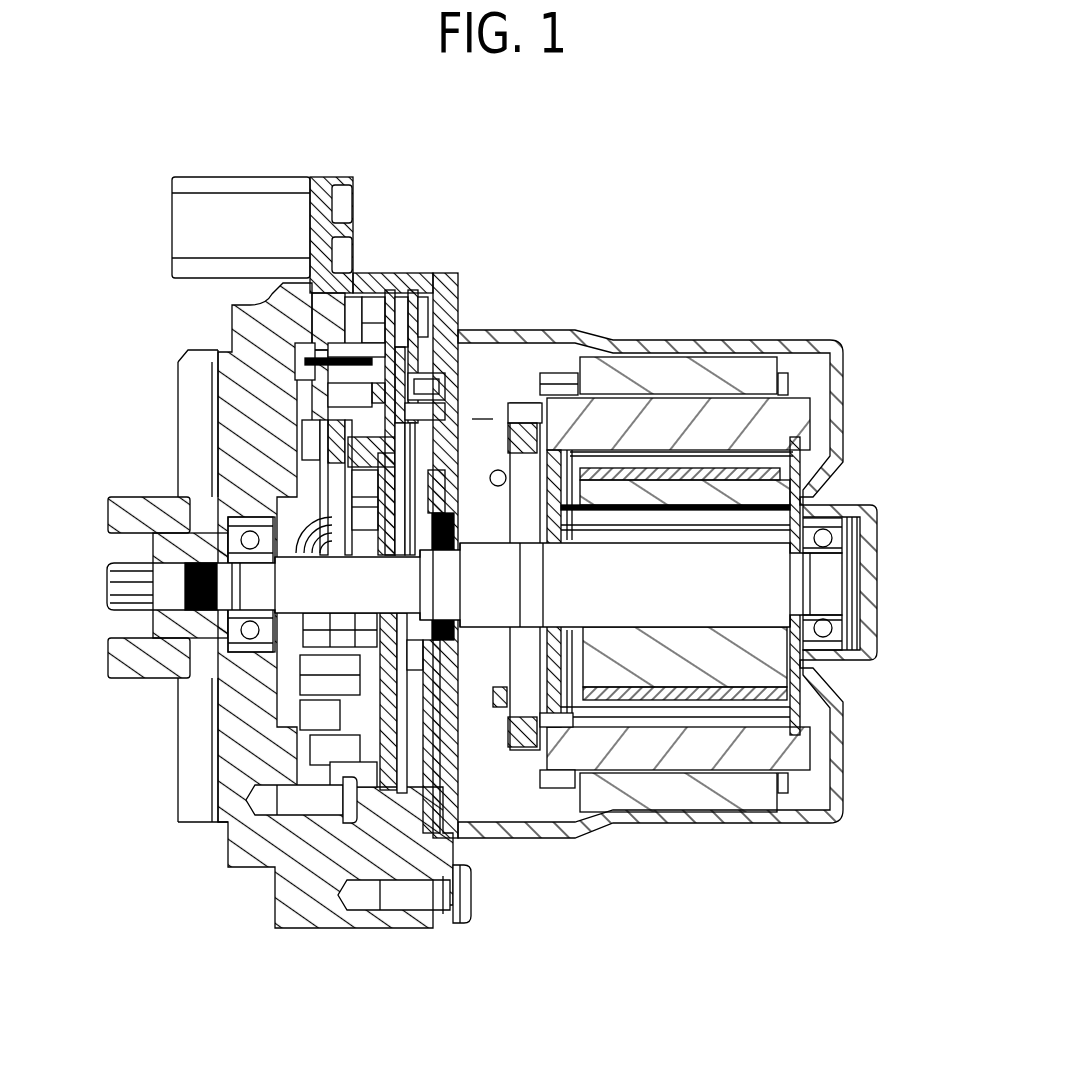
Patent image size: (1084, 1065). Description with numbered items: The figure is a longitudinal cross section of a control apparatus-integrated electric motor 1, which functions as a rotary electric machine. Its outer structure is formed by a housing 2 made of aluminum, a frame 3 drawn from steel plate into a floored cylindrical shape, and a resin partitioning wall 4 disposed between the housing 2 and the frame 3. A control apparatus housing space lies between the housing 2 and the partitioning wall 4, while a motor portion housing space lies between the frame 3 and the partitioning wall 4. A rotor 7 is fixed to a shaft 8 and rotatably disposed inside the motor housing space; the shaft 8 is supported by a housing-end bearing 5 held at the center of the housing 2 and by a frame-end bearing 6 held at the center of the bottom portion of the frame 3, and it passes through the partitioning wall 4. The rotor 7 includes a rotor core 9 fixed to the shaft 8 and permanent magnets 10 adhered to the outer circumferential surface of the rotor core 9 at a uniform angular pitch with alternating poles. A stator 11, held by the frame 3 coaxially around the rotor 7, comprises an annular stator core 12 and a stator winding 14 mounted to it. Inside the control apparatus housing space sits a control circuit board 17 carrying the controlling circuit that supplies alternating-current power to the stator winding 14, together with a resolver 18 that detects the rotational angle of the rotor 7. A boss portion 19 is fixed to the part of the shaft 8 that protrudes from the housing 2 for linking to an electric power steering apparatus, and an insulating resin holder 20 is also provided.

The control apparatus-integrated electric motor 1 is at (127, 100).
The housing 2 is at (242, 340).
The frame 3 is at (798, 340).
The partitioning wall 4 is at (453, 347).
The housing-end bearing 5 is at (207, 685).
The frame-end bearing 6 is at (848, 655).
The rotor 7 is at (673, 665).
The shaft 8 is at (777, 592).
The rotor core 9 is at (640, 667).
The permanent magnets 10 is at (687, 697).
The stator 11 is at (675, 521).
The stator core 12 is at (647, 363).
The stator winding 14 is at (695, 413).
The control circuit board 17 is at (357, 708).
The resolver 18 is at (447, 697).
The boss portion 19 is at (137, 503).
The holder 20 is at (522, 397).